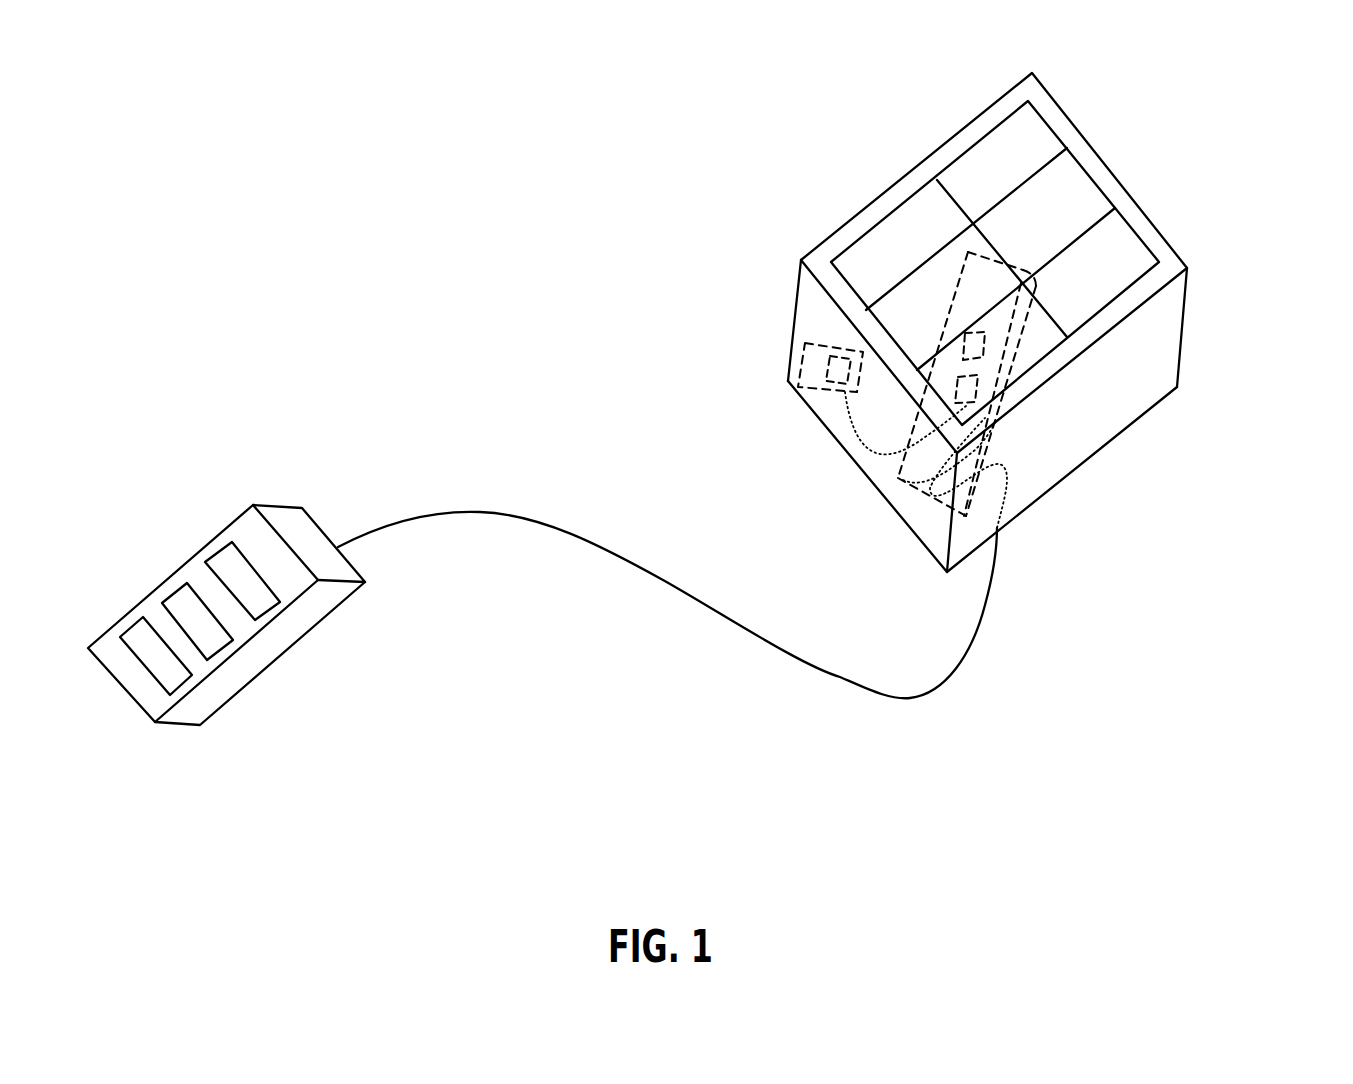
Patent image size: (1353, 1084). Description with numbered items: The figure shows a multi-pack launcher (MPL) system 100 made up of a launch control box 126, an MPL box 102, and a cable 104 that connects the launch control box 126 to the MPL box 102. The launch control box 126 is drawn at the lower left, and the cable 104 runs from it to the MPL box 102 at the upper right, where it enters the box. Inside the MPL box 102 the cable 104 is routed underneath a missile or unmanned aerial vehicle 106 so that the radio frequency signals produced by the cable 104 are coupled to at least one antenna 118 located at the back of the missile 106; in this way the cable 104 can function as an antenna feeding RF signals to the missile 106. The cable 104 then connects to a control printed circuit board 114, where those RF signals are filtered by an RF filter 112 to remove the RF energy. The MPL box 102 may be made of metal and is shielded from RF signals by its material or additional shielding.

The multi-pack launcher system 100 is at (1226, 89).
The MPL box 102 is at (802, 260).
The cable 104 is at (502, 513).
The missile 106 is at (1027, 275).
The RF filter 112 is at (838, 390).
The control printed circuit board 114 is at (797, 367).
The antenna 118 is at (985, 357).
The launch control box 126 is at (287, 653).